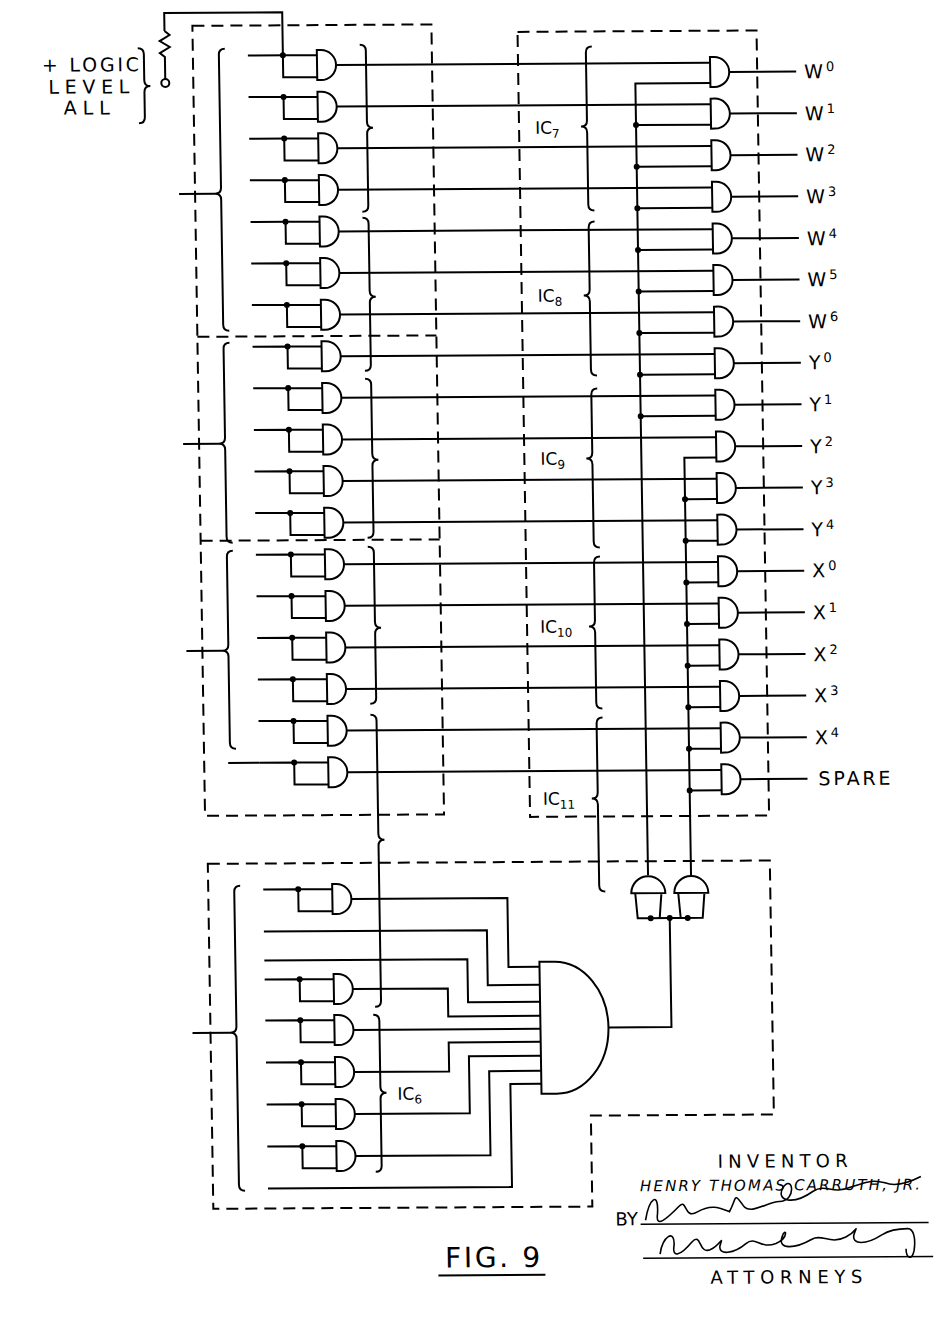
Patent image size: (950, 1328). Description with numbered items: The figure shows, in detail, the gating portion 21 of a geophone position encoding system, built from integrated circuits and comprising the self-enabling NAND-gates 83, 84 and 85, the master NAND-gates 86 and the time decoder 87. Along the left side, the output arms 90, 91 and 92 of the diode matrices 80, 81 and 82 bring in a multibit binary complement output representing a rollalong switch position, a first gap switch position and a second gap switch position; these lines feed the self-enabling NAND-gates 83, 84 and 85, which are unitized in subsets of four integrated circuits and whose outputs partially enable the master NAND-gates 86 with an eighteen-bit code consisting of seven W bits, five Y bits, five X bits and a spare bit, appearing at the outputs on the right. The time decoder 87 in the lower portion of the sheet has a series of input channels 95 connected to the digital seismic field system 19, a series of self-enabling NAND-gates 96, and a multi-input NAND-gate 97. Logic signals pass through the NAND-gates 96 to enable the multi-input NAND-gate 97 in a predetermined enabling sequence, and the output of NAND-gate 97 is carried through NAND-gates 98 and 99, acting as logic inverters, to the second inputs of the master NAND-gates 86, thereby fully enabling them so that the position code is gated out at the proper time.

The digital seismic field system 19 is at (136, 1045).
The gating circuit 21 is at (148, 318).
The diode matrix 80 is at (105, 209).
The diode matrix 81 is at (109, 458).
The diode matrix 82 is at (113, 665).
The self-enabling NAND-gates 83 is at (431, 25).
The self-enabling NAND-gates 84 is at (192, 384).
The self-enabling NAND-gates 85 is at (192, 590).
The master NAND-gates 86 is at (756, 33).
The time decoder 87 is at (756, 917).
The output arm 90 is at (182, 198).
The output arm 91 is at (185, 447).
The output arm 92 is at (188, 655).
The input channels 95 is at (184, 1027).
The self-enabling NAND-gates 96 is at (329, 1172).
The multi-input NAND-gate 97 is at (589, 1058).
The NAND-gate 98 is at (618, 894).
The NAND-gate 99 is at (694, 893).